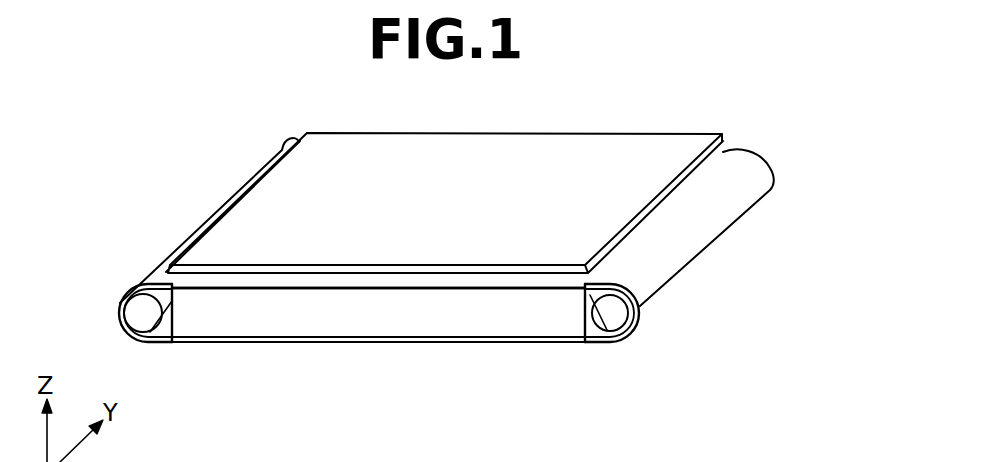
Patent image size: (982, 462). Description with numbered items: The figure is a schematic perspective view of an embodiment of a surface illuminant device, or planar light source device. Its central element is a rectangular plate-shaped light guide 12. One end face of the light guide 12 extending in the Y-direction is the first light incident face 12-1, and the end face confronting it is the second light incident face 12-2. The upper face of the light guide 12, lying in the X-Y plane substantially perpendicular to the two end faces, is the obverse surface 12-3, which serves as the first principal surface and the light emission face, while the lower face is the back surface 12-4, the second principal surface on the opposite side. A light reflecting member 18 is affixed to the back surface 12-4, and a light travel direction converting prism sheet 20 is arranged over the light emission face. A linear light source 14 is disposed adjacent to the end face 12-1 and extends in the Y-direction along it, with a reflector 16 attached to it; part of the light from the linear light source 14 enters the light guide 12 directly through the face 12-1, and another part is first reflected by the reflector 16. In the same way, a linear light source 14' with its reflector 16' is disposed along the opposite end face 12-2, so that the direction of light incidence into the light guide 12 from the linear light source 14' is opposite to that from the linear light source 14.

The plate-shaped light guide 12 is at (422, 318).
The first light incident face 12-1 is at (152, 330).
The second light incident face 12-2 is at (604, 340).
The obverse surface 12-3 is at (347, 277).
The back surface 12-4 is at (297, 339).
The linear light source 14 is at (116, 288).
The linear light source 14' is at (659, 321).
The reflector 16 is at (209, 220).
The reflector 16' is at (741, 227).
The light reflecting member 18 is at (497, 347).
The light travel direction converting prism sheet 20 is at (557, 148).